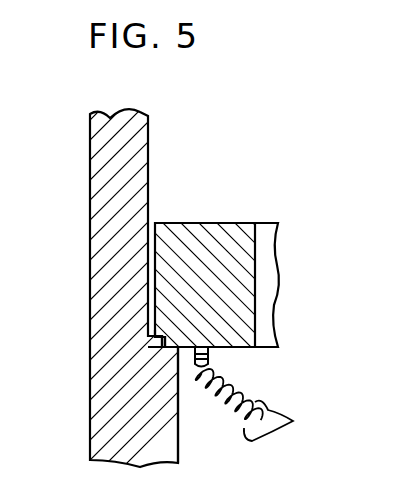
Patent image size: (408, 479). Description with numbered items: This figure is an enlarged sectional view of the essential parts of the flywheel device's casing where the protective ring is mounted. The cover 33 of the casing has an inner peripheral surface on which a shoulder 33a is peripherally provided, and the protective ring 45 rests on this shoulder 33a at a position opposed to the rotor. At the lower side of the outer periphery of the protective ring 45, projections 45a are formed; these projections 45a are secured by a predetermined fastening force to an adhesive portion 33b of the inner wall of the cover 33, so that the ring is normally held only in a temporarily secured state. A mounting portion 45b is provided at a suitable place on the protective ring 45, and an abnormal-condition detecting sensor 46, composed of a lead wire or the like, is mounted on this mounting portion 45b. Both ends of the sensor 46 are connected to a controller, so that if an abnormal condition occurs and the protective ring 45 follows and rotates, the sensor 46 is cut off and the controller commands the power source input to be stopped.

The cover 33 is at (100, 165).
The shoulder 33a is at (180, 349).
The adhesive portion 33b is at (148, 340).
The protective ring 45 is at (196, 226).
The projections 45a is at (160, 340).
The mounting portion 45b is at (208, 360).
The abnormal-condition detecting sensor 46 is at (293, 421).